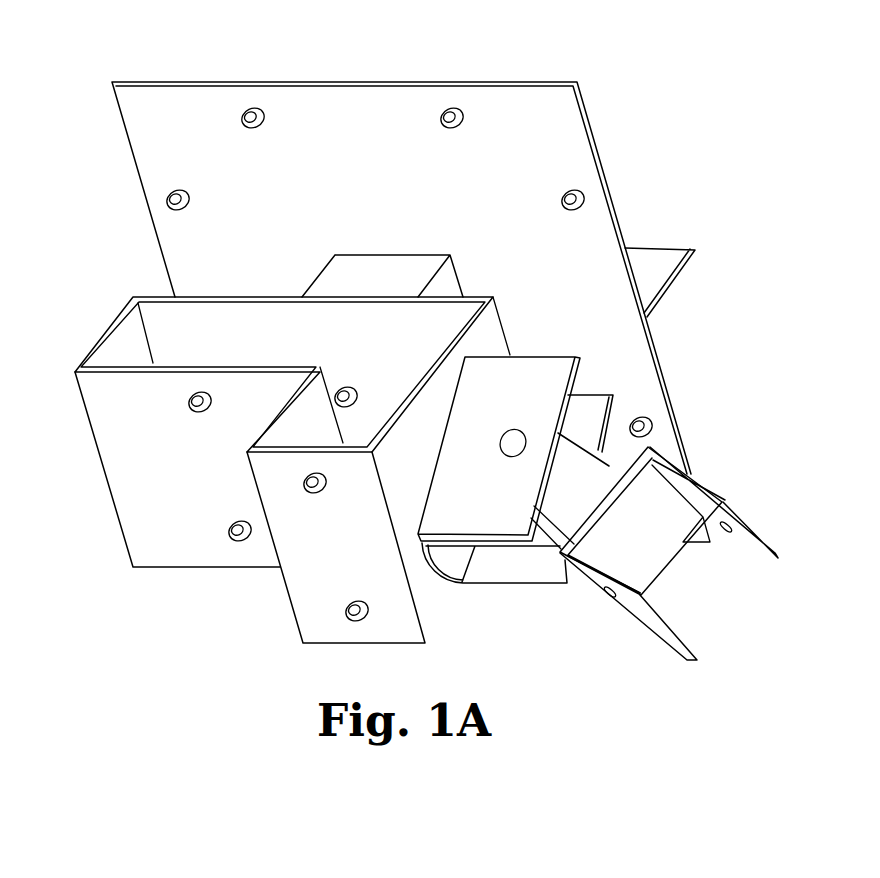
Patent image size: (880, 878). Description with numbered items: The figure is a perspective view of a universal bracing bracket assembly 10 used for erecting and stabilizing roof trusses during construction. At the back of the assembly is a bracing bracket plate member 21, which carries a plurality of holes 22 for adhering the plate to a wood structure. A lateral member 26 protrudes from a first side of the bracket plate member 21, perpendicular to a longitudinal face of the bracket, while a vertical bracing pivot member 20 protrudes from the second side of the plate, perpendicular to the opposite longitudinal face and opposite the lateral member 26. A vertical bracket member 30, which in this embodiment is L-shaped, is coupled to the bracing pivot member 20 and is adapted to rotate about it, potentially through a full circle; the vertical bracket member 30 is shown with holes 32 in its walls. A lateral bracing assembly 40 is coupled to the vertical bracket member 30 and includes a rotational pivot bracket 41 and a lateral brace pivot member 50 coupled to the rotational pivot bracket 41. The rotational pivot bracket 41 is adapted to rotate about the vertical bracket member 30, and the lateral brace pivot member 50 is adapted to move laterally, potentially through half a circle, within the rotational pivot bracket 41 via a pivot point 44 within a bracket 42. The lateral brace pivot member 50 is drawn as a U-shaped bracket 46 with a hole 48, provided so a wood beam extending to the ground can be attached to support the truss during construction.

The universal bracing bracket assembly 10 is at (403, 242).
The vertical bracing pivot member 20 is at (372, 272).
The bracing bracket plate member 21 is at (158, 97).
The holes 22 is at (258, 108).
The lateral member 26 is at (662, 260).
The vertical bracket member 30 is at (260, 454).
The bracket holes 32 is at (192, 407).
The lateral bracing assembly 40 is at (569, 486).
The rotational pivot bracket 41 is at (516, 585).
The bracket 42 is at (515, 507).
The pivot point 44 is at (508, 457).
The clip 46 is at (677, 522).
The clip hole 48 is at (653, 431).
The lateral brace pivot member 50 is at (777, 562).